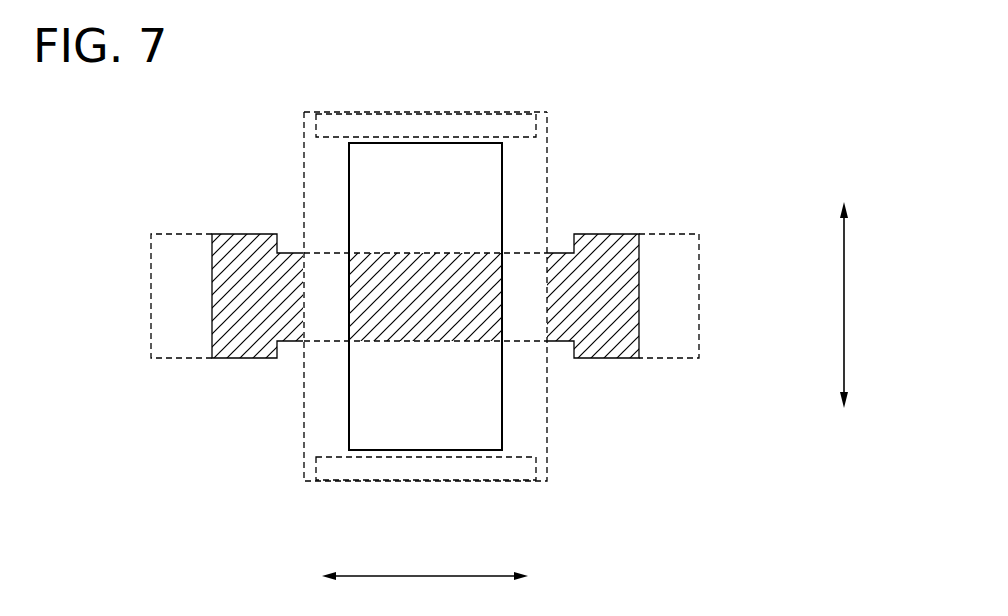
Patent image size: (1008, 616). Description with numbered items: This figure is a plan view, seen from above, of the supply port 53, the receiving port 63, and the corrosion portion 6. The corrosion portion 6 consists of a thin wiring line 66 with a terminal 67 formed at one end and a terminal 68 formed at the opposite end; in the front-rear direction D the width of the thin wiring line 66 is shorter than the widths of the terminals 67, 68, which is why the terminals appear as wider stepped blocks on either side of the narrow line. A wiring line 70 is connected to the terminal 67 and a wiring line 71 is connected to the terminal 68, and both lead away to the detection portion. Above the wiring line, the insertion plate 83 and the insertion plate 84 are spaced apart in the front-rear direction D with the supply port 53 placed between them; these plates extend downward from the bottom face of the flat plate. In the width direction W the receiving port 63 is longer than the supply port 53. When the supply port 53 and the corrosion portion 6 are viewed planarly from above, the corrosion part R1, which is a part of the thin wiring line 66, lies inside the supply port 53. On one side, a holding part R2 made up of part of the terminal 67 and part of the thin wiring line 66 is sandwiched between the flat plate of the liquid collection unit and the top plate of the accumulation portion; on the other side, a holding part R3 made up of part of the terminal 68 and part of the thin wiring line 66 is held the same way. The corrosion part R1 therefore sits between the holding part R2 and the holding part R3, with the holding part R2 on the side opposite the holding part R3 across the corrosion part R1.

The corrosion portion 6 is at (593, 175).
The supply port 53 is at (378, 147).
The receiving port 63 is at (407, 117).
The thin wiring line 66 is at (527, 248).
The terminal 67 is at (652, 253).
The terminal 68 is at (197, 253).
The wiring line 70 is at (690, 301).
The wiring line 71 is at (170, 301).
The insertion plate 83 is at (395, 467).
The insertion plate 84 is at (333, 117).
The corrosion part R1 is at (433, 330).
The holding part R2 is at (611, 348).
The holding part R3 is at (247, 347).
The width direction W is at (425, 591).
The front-rear direction D is at (857, 305).